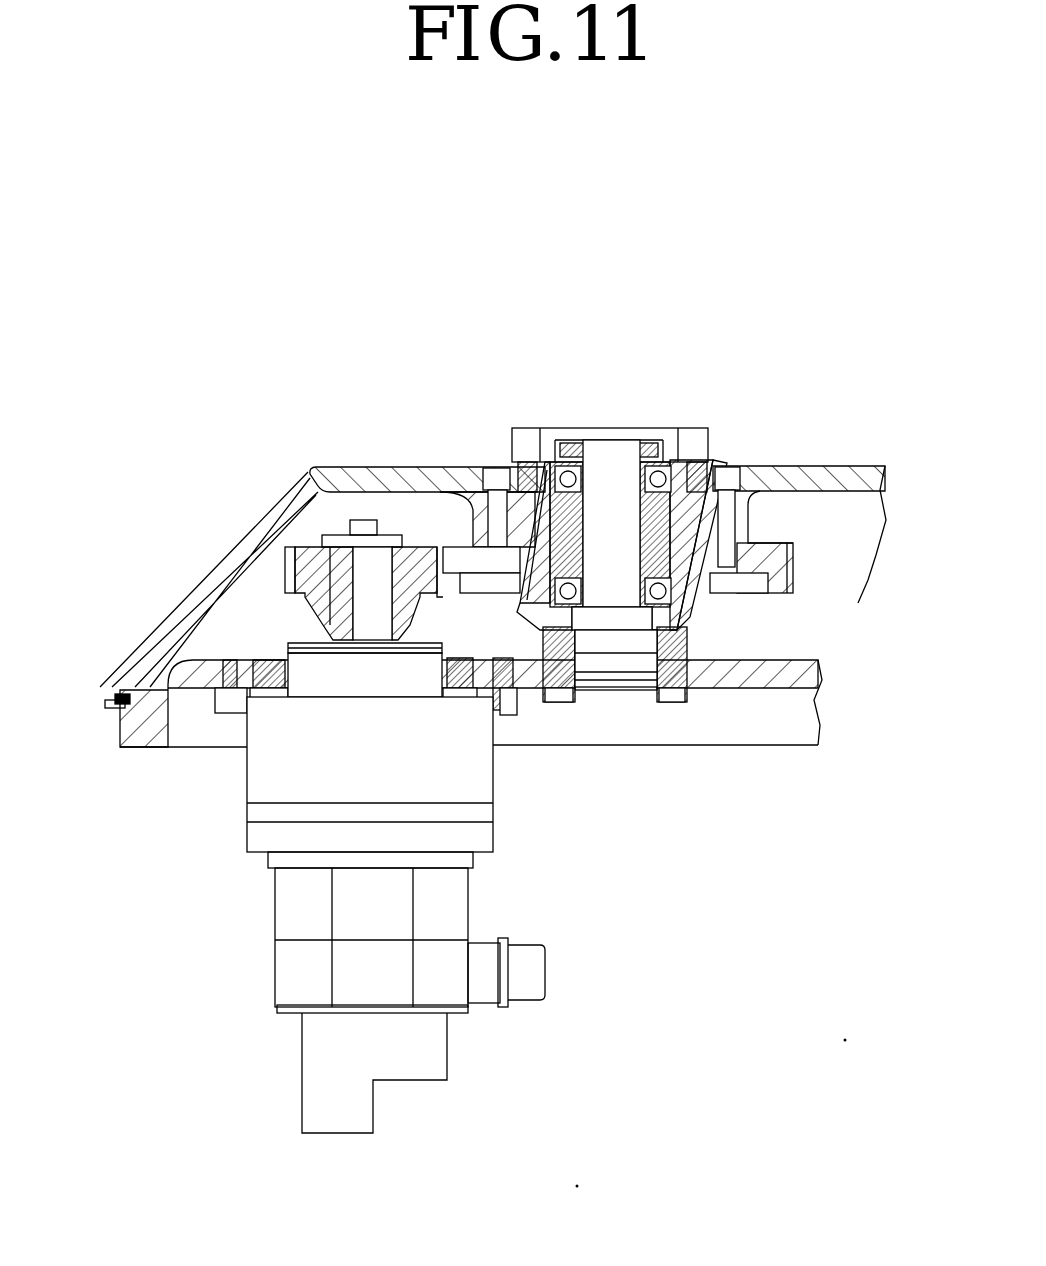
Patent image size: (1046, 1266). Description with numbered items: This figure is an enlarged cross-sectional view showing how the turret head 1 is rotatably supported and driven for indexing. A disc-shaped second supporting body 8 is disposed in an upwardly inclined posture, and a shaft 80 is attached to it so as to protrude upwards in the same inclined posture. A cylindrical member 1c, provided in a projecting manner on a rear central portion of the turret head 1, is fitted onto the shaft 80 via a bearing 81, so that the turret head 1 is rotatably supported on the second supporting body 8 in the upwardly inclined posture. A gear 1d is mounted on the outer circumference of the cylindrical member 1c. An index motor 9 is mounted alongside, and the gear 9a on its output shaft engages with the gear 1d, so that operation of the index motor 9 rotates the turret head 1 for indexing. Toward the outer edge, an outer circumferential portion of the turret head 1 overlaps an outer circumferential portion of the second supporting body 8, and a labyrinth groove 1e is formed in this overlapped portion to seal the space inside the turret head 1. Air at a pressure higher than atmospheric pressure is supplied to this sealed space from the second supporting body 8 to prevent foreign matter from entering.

The turret head 1 is at (383, 475).
The cylindrical member 1c is at (693, 520).
The gear 1d is at (793, 573).
The labyrinth groove 1e is at (108, 705).
The second supporting body 8 is at (757, 680).
The index motor 9 is at (275, 780).
The gear 9a is at (292, 570).
The shaft 80 is at (612, 480).
The bearing 81 is at (705, 467).